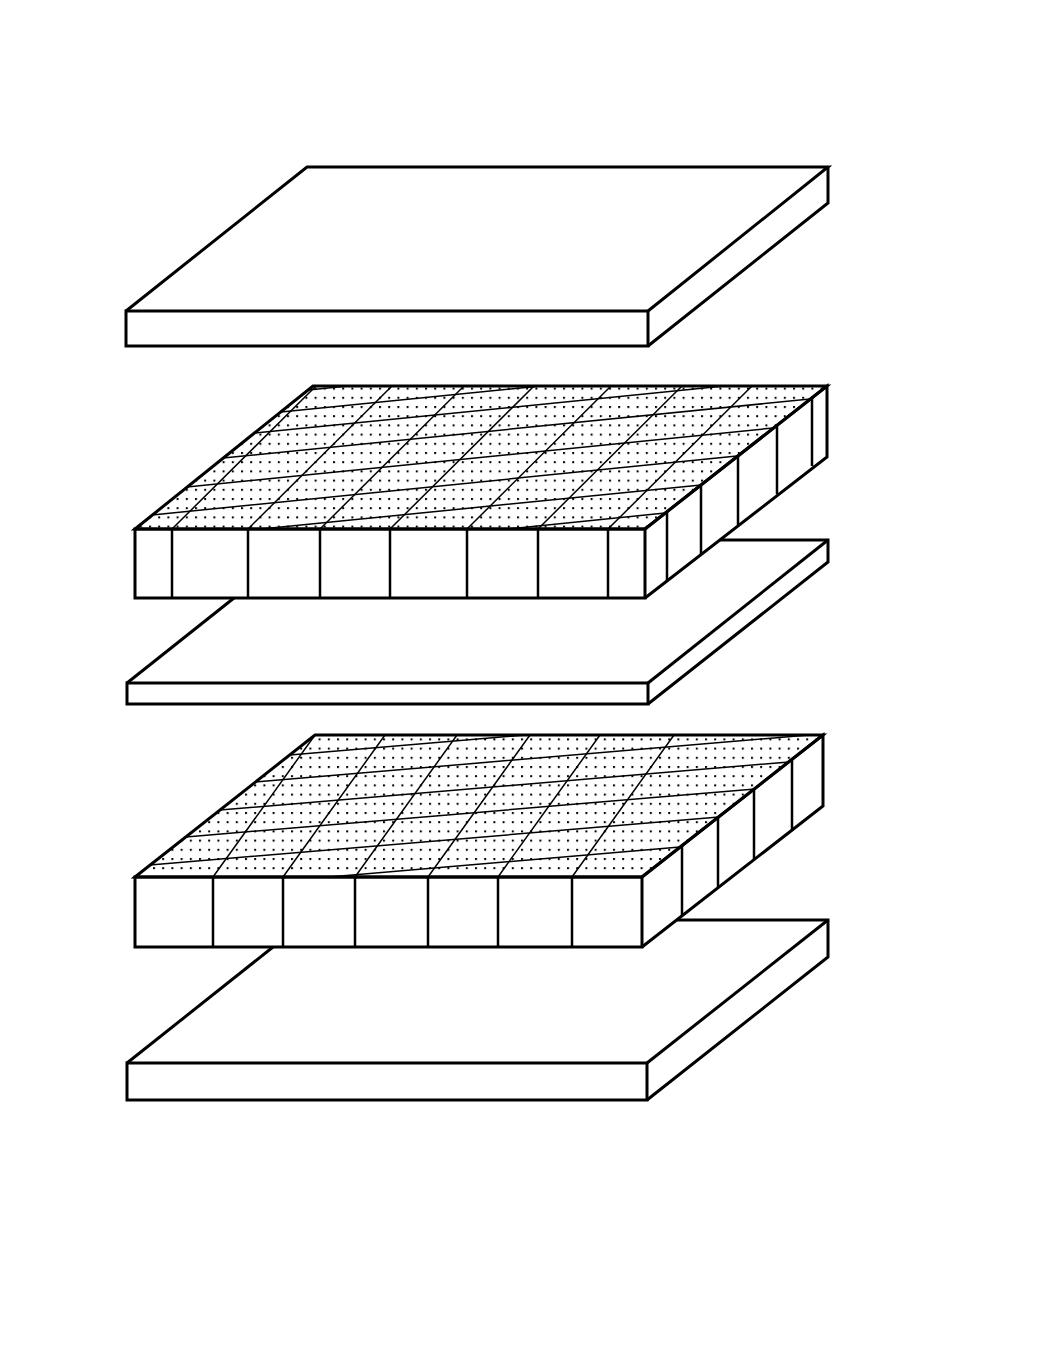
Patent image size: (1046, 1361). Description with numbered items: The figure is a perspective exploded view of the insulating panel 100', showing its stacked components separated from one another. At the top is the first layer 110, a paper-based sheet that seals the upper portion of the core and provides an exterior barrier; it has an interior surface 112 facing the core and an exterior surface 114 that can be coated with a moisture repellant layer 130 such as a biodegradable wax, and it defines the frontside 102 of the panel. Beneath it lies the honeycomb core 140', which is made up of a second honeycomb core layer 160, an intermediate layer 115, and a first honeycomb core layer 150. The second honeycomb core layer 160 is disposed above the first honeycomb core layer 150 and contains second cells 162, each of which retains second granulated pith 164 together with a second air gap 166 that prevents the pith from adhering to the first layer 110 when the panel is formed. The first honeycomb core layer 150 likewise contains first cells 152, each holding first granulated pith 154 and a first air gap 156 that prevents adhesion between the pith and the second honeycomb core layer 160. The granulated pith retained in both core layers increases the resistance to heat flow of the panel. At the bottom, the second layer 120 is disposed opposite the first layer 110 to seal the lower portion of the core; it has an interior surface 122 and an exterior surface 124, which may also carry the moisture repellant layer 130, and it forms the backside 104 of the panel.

The insulating panel 100' is at (502, 660).
The frontside 102 is at (738, 184).
The backside 104 is at (587, 1120).
The first layer 110 is at (802, 208).
The interior surface 112 is at (126, 338).
The exterior surface 114 is at (270, 228).
The moisture repellant layer 130 is at (223, 275).
The intermediate layer 115 is at (744, 631).
The honeycomb core 140' is at (502, 665).
The first honeycomb core layer 150 is at (121, 922).
The first cells 152 is at (677, 847).
The first granulated pith 154 is at (568, 772).
The first air gap 156 is at (515, 800).
The second honeycomb core layer 160 is at (121, 568).
The second cells 162 is at (665, 480).
The second granulated pith 164 is at (552, 440).
The second air gap 166 is at (563, 465).
The second layer 120 is at (682, 1047).
The interior surface 122 is at (710, 986).
The exterior surface 124 is at (405, 1103).